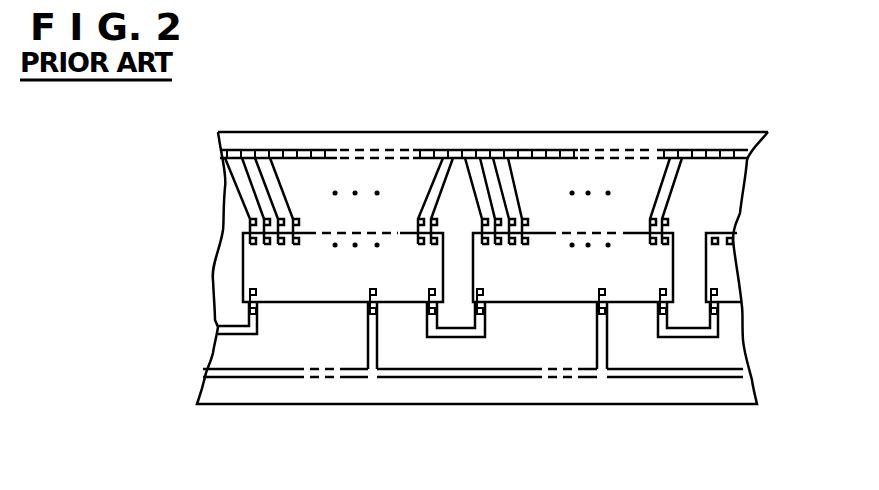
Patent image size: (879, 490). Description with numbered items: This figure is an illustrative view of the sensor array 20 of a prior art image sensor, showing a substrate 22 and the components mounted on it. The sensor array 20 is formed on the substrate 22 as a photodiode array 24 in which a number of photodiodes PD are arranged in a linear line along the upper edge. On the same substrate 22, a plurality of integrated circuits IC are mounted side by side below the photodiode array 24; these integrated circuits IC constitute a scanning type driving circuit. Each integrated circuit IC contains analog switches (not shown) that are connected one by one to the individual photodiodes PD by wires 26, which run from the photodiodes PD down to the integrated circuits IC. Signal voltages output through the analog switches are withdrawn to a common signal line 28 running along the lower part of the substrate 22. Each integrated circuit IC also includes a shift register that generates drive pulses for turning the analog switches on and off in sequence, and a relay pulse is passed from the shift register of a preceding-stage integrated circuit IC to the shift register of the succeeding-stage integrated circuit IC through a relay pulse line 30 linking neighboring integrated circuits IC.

The sensor array 20 is at (157, 182).
The substrate 22 is at (688, 132).
The photodiode array 24 is at (497, 114).
The wires 26 is at (532, 226).
The signal line 28 is at (518, 377).
The relay pulse line 30 is at (240, 337).
The photodiodes PD is at (245, 150).
The integrated circuits IC is at (305, 260).